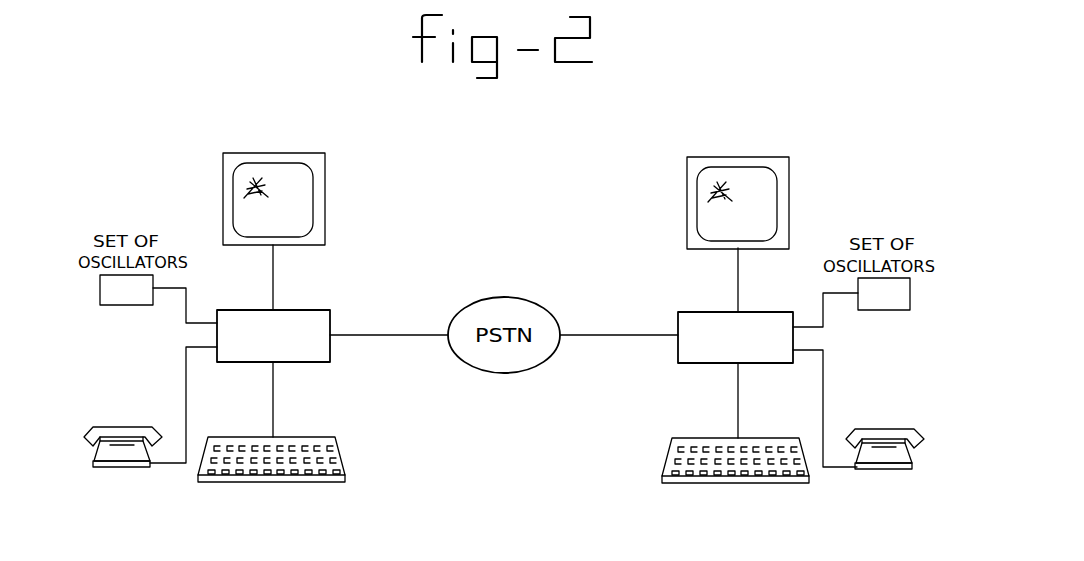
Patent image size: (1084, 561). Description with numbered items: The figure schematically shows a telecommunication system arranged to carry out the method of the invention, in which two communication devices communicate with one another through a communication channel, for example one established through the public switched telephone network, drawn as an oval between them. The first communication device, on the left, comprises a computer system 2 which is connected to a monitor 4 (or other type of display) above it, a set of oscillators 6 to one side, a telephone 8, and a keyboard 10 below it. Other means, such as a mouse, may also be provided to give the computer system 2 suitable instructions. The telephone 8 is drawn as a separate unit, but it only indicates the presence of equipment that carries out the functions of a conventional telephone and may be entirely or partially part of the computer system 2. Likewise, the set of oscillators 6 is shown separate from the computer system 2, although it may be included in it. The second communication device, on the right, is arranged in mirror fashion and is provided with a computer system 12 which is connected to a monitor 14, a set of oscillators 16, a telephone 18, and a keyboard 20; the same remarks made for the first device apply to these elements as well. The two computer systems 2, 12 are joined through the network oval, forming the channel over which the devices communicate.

The computer system 2 is at (317, 310).
The monitor 4 is at (325, 190).
The set of oscillators 6 is at (110, 305).
The telephone 8 is at (123, 467).
The keyboard 10 is at (315, 482).
The computer system 12 is at (688, 312).
The monitor 14 is at (788, 183).
The set of oscillators 16 is at (890, 310).
The telephone 18 is at (900, 473).
The keyboard 20 is at (690, 487).